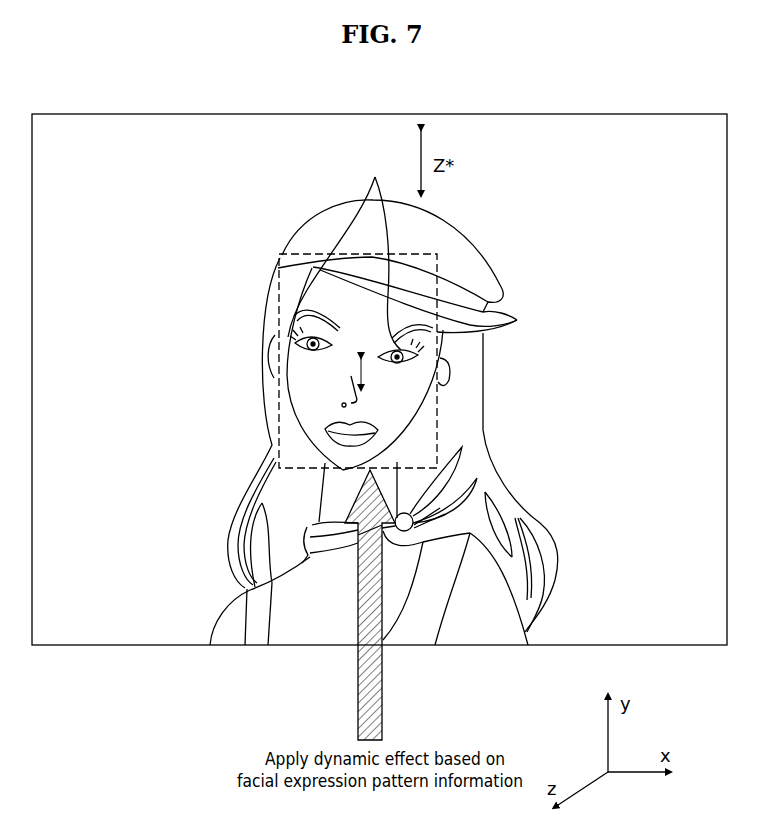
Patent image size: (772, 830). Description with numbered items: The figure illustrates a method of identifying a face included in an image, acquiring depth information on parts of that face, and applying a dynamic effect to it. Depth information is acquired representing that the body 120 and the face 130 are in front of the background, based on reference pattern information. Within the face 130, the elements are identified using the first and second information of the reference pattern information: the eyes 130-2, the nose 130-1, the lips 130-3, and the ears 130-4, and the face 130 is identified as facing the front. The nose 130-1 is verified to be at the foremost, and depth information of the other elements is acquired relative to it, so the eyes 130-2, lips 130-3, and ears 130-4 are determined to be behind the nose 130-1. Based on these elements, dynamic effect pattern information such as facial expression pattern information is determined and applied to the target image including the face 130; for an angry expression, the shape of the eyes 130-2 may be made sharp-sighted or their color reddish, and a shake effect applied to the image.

The body 120 is at (293, 627).
The face 130 is at (308, 404).
The nose 130-1 is at (348, 397).
The eyes 130-2 is at (375, 178).
The lips 130-3 is at (330, 429).
The ears 130-4 is at (274, 338).